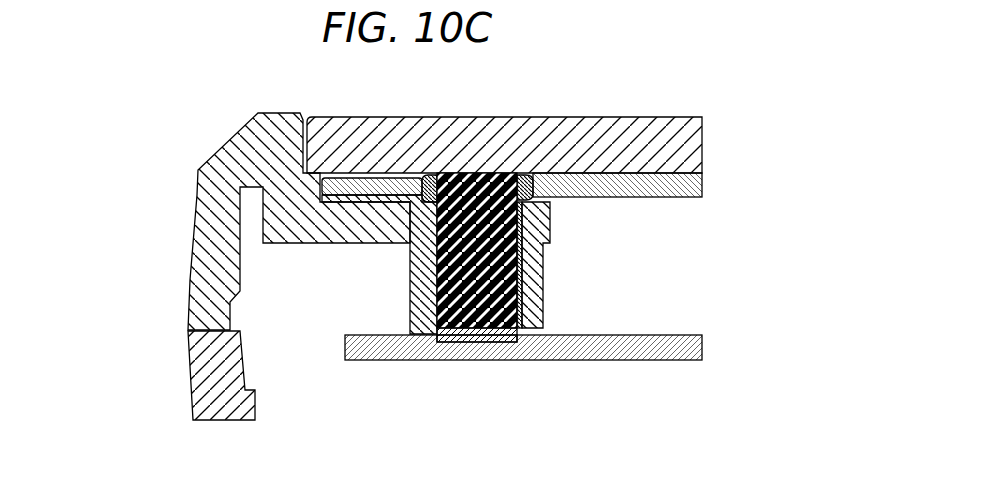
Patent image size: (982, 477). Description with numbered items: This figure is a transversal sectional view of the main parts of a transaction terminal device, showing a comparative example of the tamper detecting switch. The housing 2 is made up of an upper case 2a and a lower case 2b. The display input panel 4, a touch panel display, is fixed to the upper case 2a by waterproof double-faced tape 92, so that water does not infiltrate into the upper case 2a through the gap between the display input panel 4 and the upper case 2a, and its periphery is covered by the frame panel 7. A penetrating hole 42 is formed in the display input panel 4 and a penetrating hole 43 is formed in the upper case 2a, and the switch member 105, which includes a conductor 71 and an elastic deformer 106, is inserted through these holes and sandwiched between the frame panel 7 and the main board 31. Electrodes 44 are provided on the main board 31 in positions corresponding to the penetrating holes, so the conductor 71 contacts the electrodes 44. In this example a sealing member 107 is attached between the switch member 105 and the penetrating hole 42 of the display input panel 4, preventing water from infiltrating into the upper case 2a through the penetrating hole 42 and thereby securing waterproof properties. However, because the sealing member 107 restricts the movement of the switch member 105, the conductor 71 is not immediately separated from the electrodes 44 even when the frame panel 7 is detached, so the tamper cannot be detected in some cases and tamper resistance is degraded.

The housing 2 is at (228, 266).
The upper case 2a is at (190, 280).
The lower case 2b is at (190, 377).
The frame panel 7 is at (623, 117).
The display input panel 4 is at (637, 197).
The main board 31 is at (622, 362).
The waterproof double-faced tape 92 is at (343, 203).
The penetrating hole 42 is at (427, 197).
The sealing member 107 is at (430, 175).
The penetrating hole 43 is at (433, 273).
The switch member 105 is at (519, 292).
The elastic deformer 106 is at (520, 262).
The electrodes 44 is at (457, 343).
The conductor 71 is at (498, 338).